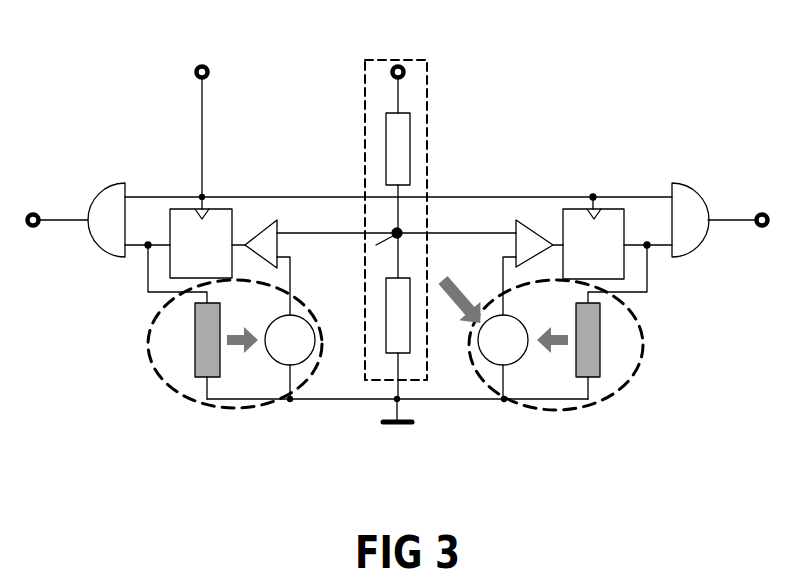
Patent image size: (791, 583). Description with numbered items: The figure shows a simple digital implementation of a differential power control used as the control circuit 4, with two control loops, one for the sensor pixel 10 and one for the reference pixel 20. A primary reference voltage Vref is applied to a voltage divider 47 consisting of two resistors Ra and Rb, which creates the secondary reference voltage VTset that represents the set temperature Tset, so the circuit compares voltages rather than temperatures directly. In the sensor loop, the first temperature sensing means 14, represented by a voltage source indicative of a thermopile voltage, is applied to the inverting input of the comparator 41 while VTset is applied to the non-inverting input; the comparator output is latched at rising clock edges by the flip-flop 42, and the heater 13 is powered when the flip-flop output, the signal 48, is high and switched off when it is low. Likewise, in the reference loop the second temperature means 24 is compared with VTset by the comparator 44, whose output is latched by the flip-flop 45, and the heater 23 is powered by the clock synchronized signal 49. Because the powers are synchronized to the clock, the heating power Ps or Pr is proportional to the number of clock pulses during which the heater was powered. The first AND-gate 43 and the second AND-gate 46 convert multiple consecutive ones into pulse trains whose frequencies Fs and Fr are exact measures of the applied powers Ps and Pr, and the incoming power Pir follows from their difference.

The control circuit 4 is at (86, 394).
The sensor pixel 10 is at (614, 393).
The heater 13 is at (600, 374).
The first temperature sensing means 14 is at (522, 326).
The reference pixel 20 is at (177, 391).
The heater 23 is at (199, 370).
The second temperature means 24 is at (270, 330).
The comparator 41 is at (530, 238).
The flip-flop 42 is at (571, 208).
The first AND-gate 43 is at (692, 196).
The comparator 44 is at (258, 237).
The flip-flop 45 is at (180, 208).
The second AND-gate 46 is at (108, 197).
The voltage divider 47 is at (374, 57).
The signal 48 is at (648, 279).
The clock synchronized signal 49 is at (147, 271).